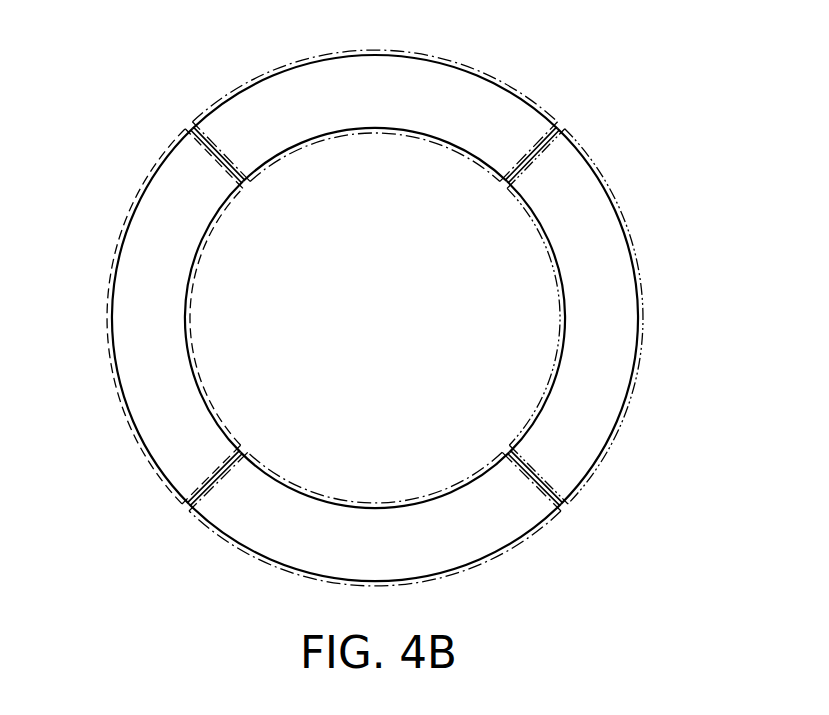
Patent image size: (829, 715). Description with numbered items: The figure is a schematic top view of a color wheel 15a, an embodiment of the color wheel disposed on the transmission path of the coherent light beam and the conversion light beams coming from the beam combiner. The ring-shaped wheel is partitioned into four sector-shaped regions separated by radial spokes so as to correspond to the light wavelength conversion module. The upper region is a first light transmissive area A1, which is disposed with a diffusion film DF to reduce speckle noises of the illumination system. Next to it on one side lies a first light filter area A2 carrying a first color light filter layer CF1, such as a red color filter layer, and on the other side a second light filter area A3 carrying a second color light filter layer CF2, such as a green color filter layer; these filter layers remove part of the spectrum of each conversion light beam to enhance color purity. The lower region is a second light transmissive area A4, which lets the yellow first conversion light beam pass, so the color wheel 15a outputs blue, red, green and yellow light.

The first light transmissive area A1 is at (383, 50).
The first light filter area A2 is at (128, 436).
The second light filter area A3 is at (620, 436).
The second light transmissive area A4 is at (430, 585).
The diffusion film DF is at (487, 107).
The first color light filter layer CF1 is at (140, 321).
The second color light filter layer CF2 is at (612, 323).
The color wheel 15a is at (707, 605).